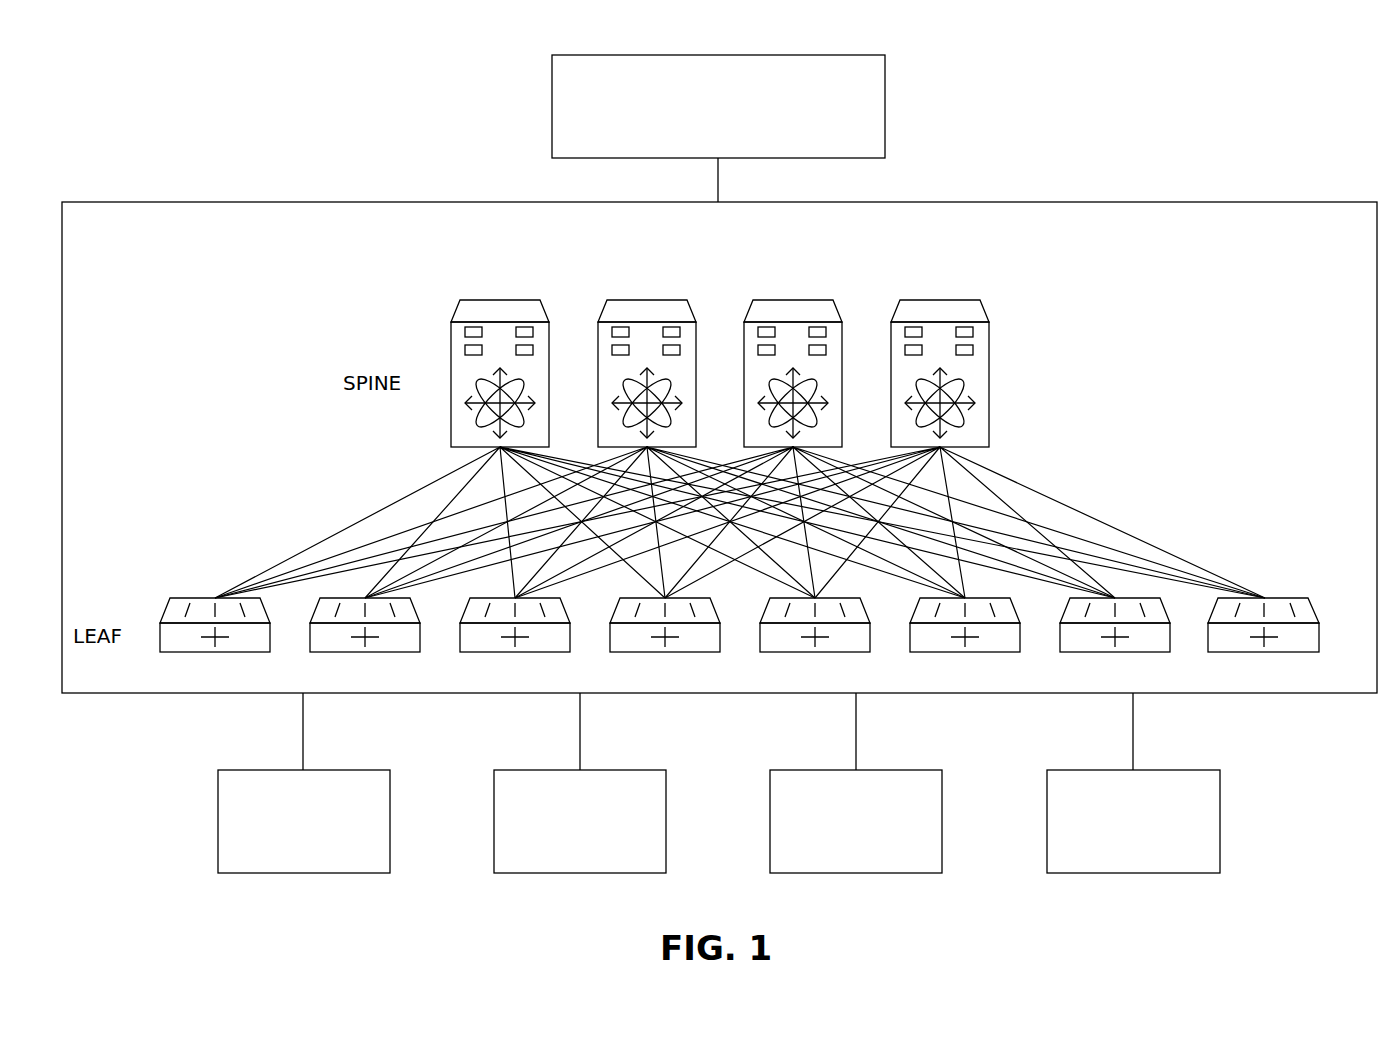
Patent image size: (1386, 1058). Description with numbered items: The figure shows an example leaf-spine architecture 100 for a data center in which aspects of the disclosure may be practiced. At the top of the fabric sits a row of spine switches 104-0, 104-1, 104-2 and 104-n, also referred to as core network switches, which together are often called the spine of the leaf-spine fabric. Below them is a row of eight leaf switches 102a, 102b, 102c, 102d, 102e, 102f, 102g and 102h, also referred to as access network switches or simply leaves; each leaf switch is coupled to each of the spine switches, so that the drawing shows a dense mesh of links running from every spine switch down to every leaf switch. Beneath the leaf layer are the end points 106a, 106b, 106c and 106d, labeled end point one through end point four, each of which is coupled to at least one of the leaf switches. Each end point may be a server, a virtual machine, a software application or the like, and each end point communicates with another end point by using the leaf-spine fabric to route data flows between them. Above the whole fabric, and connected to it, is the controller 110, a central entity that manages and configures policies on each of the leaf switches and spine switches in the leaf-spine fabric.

The leaf-spine architecture 100 is at (160, 98).
The controller 110 is at (885, 87).
The spine switch 104-0 is at (500, 300).
The spine switch 104-1 is at (667, 300).
The spine switch 104-2 is at (808, 300).
The spine switch 104-n is at (970, 300).
The leaf switch 102a is at (187, 653).
The leaf switch 102b is at (337, 653).
The leaf switch 102c is at (487, 653).
The leaf switch 102d is at (637, 653).
The leaf switch 102e is at (787, 653).
The leaf switch 102f is at (937, 653).
The leaf switch 102g is at (1087, 653).
The leaf switch 102h is at (1236, 653).
The end point 106a is at (240, 873).
The end point 106b is at (516, 873).
The end point 106c is at (792, 873).
The end point 106d is at (1069, 873).